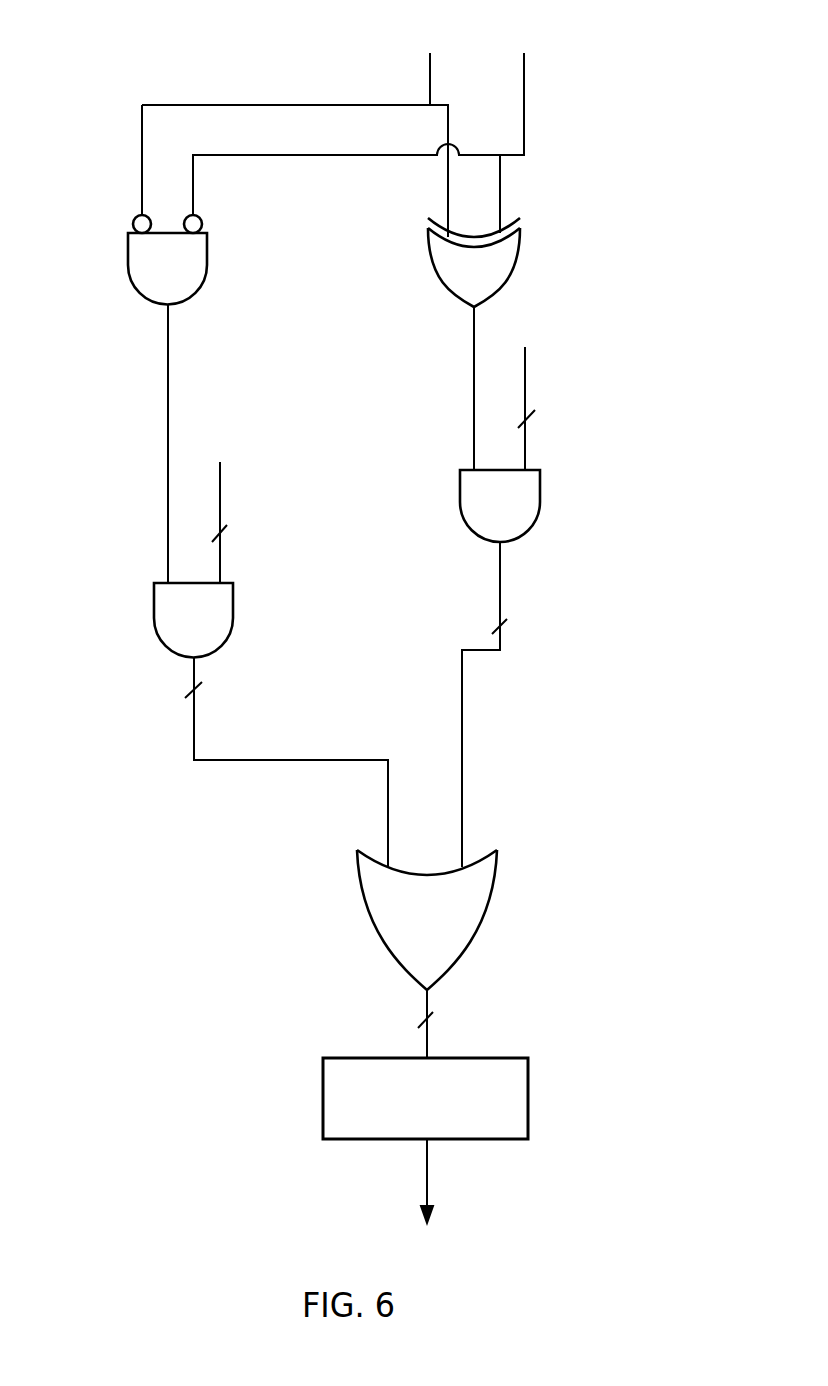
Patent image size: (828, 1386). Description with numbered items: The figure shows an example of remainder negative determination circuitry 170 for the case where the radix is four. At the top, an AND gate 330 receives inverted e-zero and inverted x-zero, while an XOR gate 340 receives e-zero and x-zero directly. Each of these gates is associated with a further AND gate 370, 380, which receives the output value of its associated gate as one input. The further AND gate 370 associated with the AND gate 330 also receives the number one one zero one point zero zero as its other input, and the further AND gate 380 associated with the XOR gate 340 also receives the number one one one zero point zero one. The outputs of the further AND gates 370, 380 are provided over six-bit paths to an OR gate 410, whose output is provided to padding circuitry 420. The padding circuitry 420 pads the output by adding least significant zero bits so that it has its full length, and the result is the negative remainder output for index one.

The remainder negative determination circuitry 170 is at (372, 638).
The AND gate 330 is at (128, 266).
The XOR gate 340 is at (432, 266).
The further AND gate 370 is at (157, 622).
The further AND gate 380 is at (463, 508).
The OR gate 410 is at (365, 908).
The padding circuitry 420 is at (322, 1097).